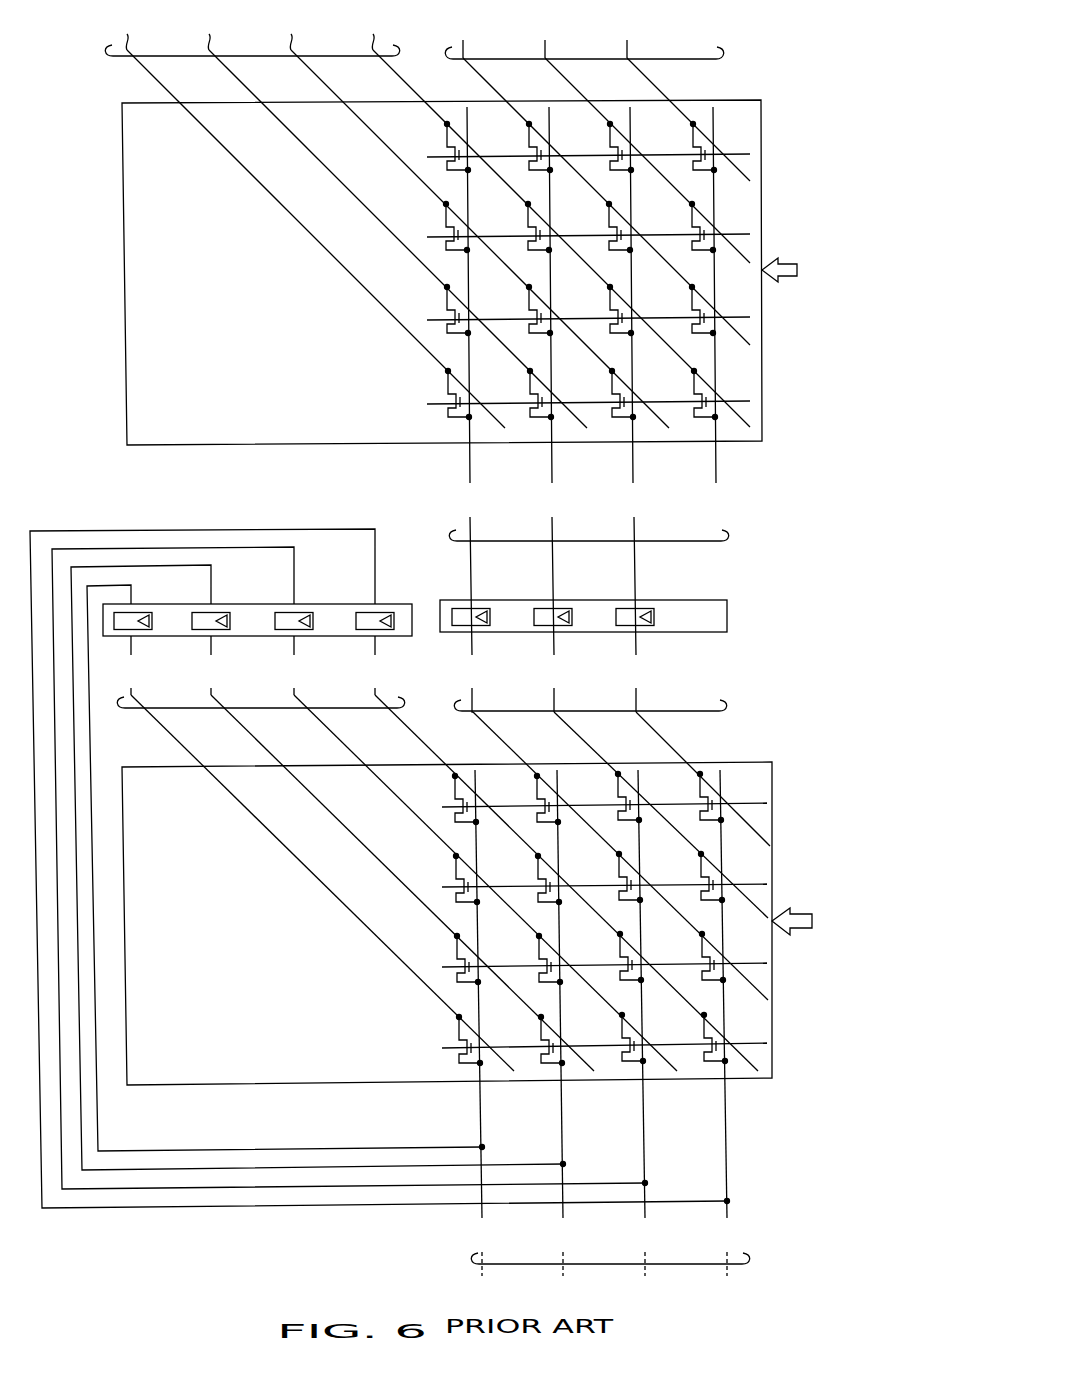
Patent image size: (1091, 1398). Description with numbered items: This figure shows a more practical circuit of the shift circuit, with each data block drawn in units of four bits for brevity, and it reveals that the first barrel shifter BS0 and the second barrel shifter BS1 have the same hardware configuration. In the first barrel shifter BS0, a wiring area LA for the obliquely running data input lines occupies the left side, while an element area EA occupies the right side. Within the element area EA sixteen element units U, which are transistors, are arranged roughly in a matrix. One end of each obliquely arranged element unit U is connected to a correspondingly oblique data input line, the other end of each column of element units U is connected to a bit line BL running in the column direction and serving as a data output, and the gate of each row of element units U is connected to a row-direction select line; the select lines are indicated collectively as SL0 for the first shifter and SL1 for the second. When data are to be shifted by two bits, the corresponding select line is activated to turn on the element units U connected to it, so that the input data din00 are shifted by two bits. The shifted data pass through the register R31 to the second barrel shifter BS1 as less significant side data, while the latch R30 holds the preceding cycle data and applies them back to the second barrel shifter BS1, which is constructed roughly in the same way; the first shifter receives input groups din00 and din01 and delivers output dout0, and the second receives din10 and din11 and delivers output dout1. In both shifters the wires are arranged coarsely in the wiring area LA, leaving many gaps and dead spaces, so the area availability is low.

The first barrel shifter BS0 is at (276, 445).
The second barrel shifter BS1 is at (262, 1082).
The wiring area LA is at (155, 424).
The element area EA is at (749, 428).
The bit line BL is at (466, 105).
The shift lines of block 0 SL0 is at (797, 267).
The shift lines of block 1 SL1 is at (812, 918).
The element unit U is at (569, 594).
The latch R30 is at (406, 604).
The register R31 is at (728, 614).
The input data din00 is at (118, 58).
The lower data input group block 0 din01 is at (722, 57).
The upper data input group block 1 din10 is at (122, 709).
The lower data input group block 1 din11 is at (725, 709).
The data output of block 0 dout0 is at (727, 539).
The data output of block 1 dout1 is at (748, 1262).